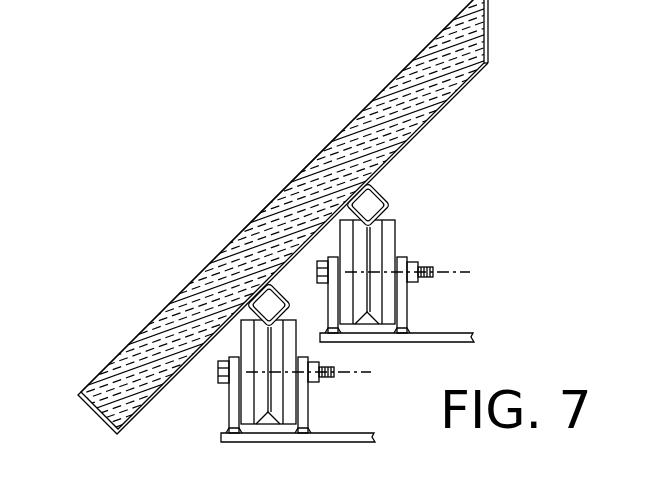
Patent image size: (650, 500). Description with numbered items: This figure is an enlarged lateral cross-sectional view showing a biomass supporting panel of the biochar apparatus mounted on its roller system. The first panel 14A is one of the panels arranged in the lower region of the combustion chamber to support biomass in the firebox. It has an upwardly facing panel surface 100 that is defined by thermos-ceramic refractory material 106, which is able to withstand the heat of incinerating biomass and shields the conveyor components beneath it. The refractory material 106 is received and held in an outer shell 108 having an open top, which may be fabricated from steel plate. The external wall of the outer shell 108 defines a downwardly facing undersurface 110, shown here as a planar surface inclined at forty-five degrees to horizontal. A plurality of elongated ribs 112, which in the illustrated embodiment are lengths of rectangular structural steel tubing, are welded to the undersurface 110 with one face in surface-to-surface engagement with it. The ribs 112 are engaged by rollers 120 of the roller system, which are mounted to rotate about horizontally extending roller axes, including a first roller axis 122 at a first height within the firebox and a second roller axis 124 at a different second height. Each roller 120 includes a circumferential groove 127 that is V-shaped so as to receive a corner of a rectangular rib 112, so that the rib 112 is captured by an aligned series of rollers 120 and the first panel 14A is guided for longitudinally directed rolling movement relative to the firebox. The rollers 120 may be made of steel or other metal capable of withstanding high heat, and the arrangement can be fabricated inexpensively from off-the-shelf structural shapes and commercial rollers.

The first panel 14A is at (183, 203).
The panel surface 100 is at (278, 191).
The thermos-ceramic refractory material 106 is at (192, 300).
The outer shell 108 is at (490, 31).
The undersurface 110 is at (400, 163).
The elongated ribs 112 is at (280, 283).
The rollers 120 is at (395, 238).
The first roller axis 122 is at (450, 272).
The second roller axis 124 is at (350, 370).
The circumferential groove 127 is at (372, 320).